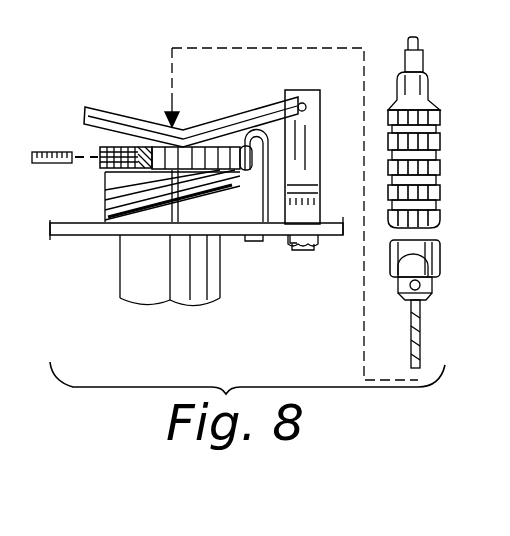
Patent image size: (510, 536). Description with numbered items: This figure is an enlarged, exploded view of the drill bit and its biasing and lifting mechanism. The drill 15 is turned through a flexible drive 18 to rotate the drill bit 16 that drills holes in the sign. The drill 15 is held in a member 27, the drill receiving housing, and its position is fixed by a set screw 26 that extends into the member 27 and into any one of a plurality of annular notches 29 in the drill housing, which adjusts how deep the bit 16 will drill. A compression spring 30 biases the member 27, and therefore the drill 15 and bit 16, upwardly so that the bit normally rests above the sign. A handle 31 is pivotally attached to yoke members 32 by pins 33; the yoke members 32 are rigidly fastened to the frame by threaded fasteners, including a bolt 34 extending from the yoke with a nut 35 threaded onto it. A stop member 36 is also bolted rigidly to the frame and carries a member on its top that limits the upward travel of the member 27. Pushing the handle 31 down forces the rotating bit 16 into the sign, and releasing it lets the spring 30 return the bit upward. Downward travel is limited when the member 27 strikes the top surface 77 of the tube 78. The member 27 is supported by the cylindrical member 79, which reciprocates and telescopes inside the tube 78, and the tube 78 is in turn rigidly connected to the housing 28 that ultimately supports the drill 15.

The drill 15 is at (443, 188).
The drill bit 16 is at (422, 343).
The flexible drive 18 is at (422, 53).
The set screw 26 is at (52, 150).
The member 27 is at (187, 128).
The housing 28 is at (92, 227).
The annular notches 29 is at (441, 152).
The compression spring 30 is at (110, 215).
The handle 31 is at (108, 108).
The yoke members 32 is at (312, 133).
The pins 33 is at (302, 104).
The bolt 34 is at (302, 250).
The nut 35 is at (284, 241).
The stop member 36 is at (268, 183).
The top surface 77 is at (157, 124).
The tube 78 is at (238, 248).
The cylindrical member 79 is at (118, 288).